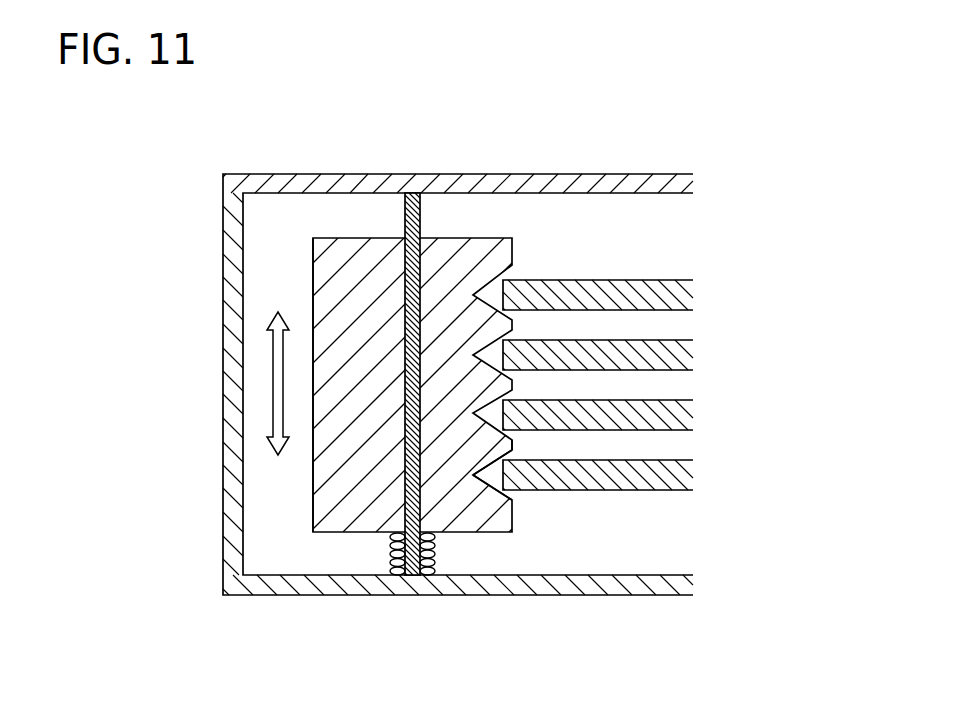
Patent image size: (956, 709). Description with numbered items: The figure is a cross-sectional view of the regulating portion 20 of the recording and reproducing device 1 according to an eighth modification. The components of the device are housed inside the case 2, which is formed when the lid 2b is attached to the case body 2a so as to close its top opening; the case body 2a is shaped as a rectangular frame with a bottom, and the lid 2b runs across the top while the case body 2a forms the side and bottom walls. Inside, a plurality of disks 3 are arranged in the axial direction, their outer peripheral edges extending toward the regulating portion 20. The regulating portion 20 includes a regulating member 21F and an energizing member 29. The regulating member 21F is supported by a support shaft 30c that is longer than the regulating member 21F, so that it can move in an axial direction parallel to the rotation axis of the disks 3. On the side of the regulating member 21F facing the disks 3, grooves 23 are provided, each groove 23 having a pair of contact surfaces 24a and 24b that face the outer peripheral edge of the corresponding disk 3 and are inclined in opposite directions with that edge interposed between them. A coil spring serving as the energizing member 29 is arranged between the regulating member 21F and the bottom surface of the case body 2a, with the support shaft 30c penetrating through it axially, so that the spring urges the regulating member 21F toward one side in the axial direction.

The recording and reproducing device 1 is at (96, 152).
The case 2 is at (212, 429).
The case body 2a is at (598, 596).
The lid 2b is at (523, 174).
The disk 3 is at (653, 497).
The regulating portion 20 is at (466, 546).
The regulating member 21F is at (325, 501).
The groove 23 is at (492, 474).
The contact surface 24a is at (512, 476).
The contact surface 24b is at (507, 462).
The energizing member 29 is at (396, 549).
The support shaft 30c is at (407, 213).